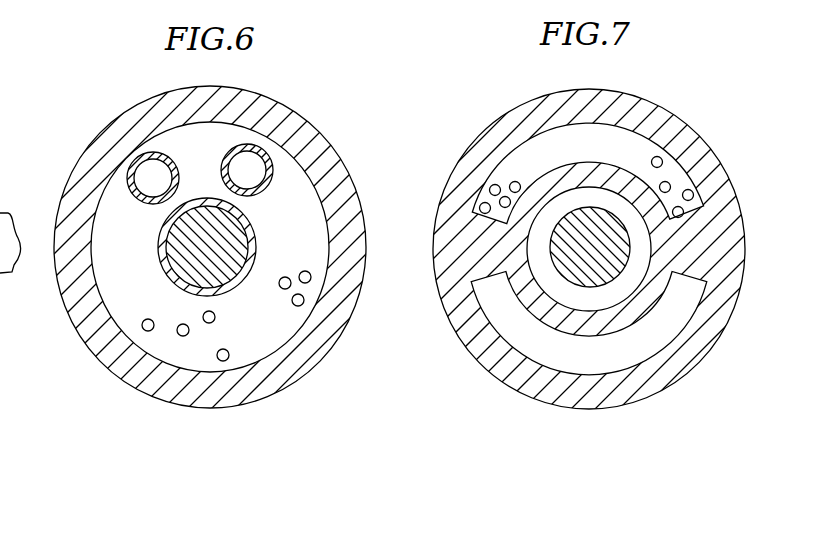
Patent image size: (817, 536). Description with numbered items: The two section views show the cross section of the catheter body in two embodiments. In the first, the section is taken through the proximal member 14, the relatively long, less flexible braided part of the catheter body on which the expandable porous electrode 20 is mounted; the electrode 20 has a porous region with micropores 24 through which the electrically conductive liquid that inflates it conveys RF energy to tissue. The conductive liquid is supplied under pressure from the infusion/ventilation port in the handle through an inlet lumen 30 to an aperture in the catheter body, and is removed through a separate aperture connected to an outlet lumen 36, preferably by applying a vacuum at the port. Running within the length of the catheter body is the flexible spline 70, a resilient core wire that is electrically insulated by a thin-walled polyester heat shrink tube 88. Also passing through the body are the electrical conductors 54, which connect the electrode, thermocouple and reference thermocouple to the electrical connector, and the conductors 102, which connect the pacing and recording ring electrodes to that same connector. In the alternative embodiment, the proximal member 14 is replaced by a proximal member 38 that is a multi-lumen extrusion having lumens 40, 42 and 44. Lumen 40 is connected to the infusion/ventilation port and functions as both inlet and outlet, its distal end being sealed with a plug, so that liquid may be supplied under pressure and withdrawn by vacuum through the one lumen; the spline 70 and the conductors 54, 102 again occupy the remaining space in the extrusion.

In FIG. 6, the proximal member 14 is at (327, 177).
In FIG. 6, the expandable porous electrode 20 is at (0, 89).
In FIG. 6, the micropores 24 is at (11, 285).
In FIG. 6, the inlet lumen 30 is at (127, 176).
In FIG. 6, the outlet lumen 36 is at (250, 144).
In FIG. 6, the flexible spline 70 is at (253, 240).
In FIG. 7, the flexible spline 70 is at (620, 245).
In FIG. 6, the heat shrink tube 88 is at (169, 279).
In FIG. 6, the conductors 102 is at (154, 350).
In FIG. 7, the conductors 102 is at (687, 163).
In FIG. 6, the electrical conductors 54 is at (304, 327).
In FIG. 7, the electrical conductors 54 is at (495, 158).
In FIG. 7, the lumen 44 is at (610, 135).
In FIG. 7, the lumen 40 is at (673, 317).
In FIG. 7, the proximal member 38 is at (727, 217).
In FIG. 7, the lumen 42 is at (530, 243).